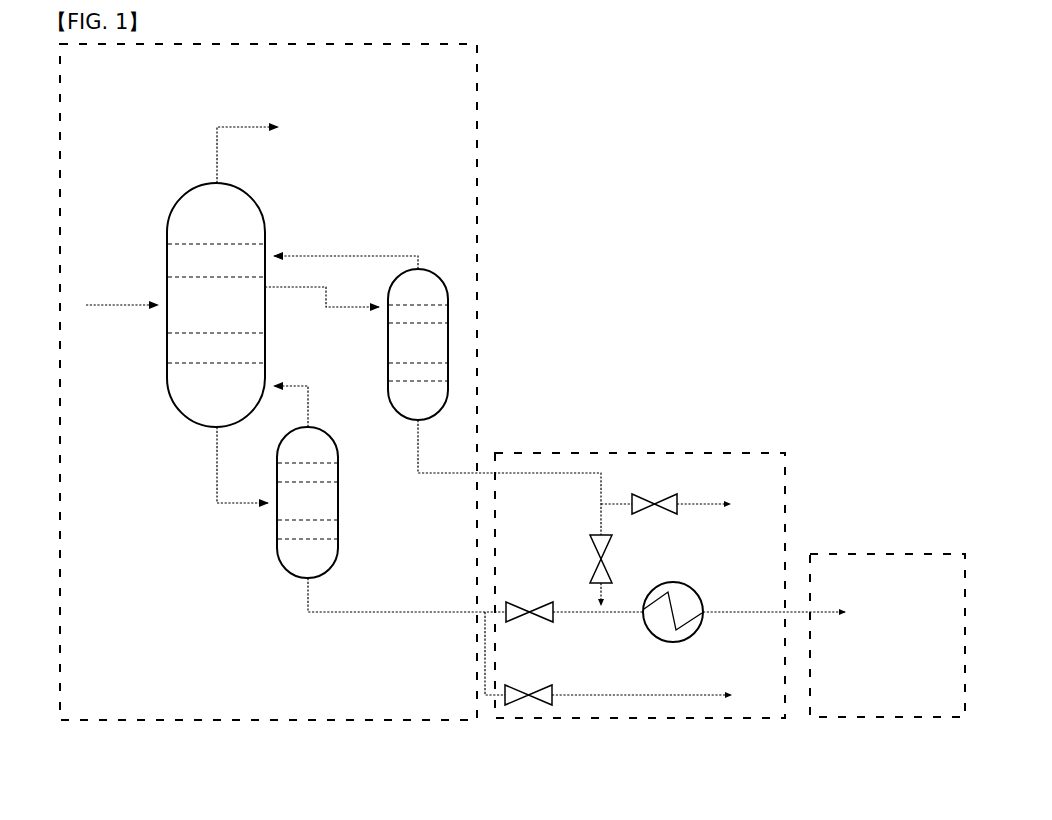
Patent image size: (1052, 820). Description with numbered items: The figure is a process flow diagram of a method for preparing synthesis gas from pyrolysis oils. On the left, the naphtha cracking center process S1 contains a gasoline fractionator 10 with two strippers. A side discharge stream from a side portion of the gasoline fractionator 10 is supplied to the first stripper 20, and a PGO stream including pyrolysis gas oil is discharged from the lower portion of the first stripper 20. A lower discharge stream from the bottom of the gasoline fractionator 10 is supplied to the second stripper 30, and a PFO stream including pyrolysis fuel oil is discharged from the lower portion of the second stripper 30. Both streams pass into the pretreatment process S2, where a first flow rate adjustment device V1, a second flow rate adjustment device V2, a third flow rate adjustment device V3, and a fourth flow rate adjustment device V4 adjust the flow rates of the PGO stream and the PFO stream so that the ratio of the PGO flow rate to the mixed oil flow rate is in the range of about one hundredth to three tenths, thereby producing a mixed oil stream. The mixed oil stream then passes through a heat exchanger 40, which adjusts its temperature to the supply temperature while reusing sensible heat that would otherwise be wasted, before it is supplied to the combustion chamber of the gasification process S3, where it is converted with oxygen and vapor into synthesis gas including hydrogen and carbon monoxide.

The gasoline fractionator 10 is at (248, 198).
The first stripper 20 is at (388, 382).
The second stripper 30 is at (340, 550).
The heat exchanger 40 is at (697, 593).
The first flow rate adjustment device V1 is at (520, 610).
The second flow rate adjustment device V2 is at (552, 687).
The third flow rate adjustment device V3 is at (606, 575).
The fourth flow rate adjustment device V4 is at (658, 503).
The naphtha cracking center process S1 is at (94, 755).
The pretreatment process S2 is at (531, 755).
The gasification process S3 is at (849, 755).